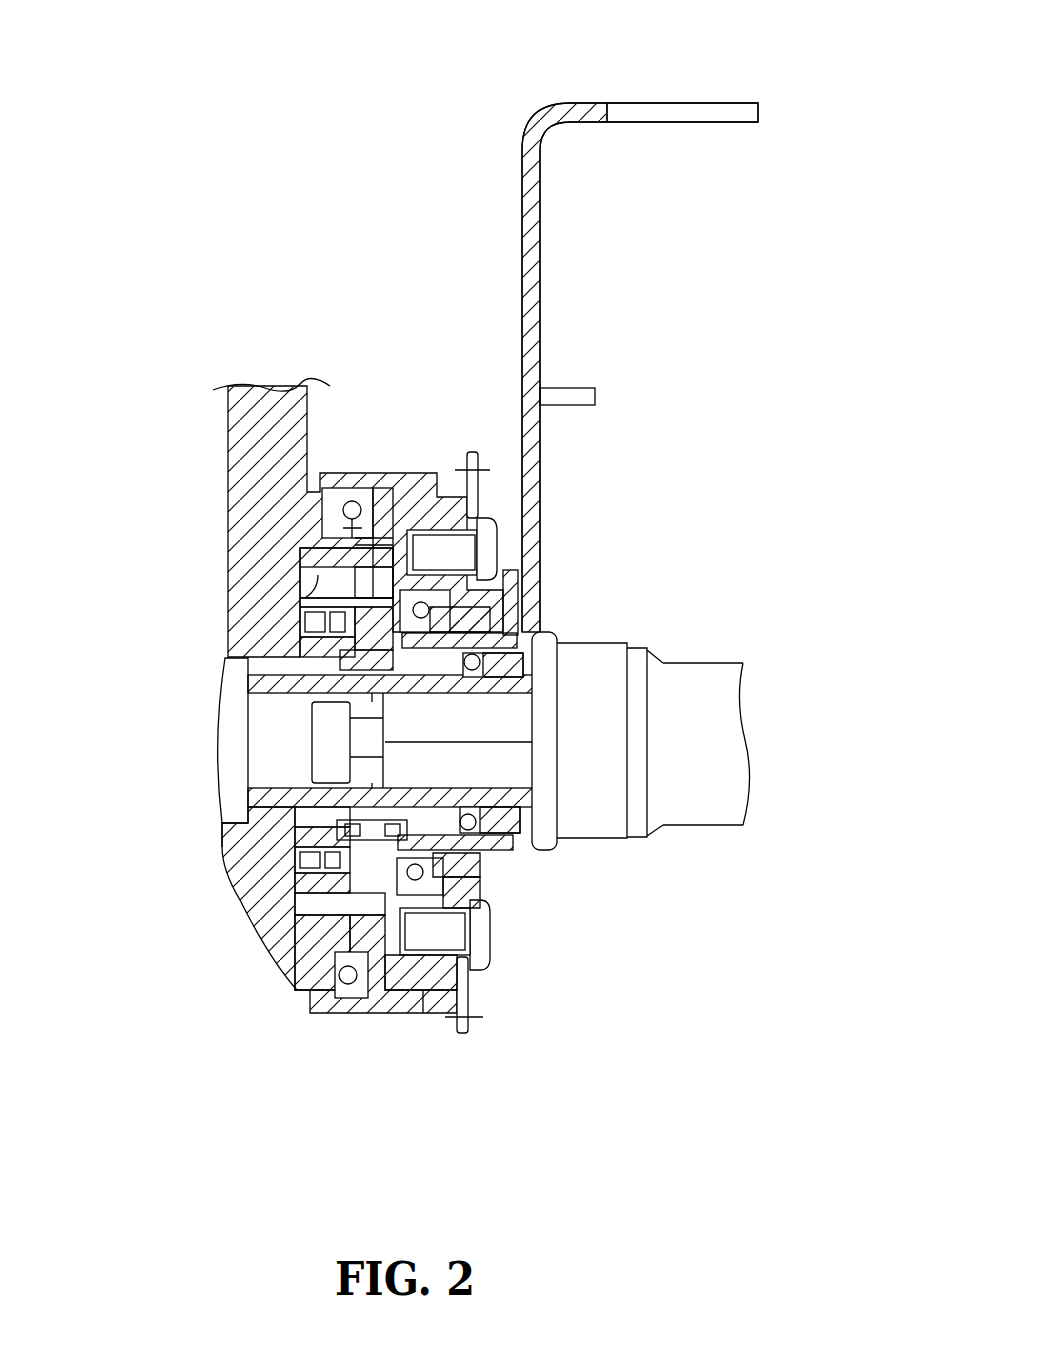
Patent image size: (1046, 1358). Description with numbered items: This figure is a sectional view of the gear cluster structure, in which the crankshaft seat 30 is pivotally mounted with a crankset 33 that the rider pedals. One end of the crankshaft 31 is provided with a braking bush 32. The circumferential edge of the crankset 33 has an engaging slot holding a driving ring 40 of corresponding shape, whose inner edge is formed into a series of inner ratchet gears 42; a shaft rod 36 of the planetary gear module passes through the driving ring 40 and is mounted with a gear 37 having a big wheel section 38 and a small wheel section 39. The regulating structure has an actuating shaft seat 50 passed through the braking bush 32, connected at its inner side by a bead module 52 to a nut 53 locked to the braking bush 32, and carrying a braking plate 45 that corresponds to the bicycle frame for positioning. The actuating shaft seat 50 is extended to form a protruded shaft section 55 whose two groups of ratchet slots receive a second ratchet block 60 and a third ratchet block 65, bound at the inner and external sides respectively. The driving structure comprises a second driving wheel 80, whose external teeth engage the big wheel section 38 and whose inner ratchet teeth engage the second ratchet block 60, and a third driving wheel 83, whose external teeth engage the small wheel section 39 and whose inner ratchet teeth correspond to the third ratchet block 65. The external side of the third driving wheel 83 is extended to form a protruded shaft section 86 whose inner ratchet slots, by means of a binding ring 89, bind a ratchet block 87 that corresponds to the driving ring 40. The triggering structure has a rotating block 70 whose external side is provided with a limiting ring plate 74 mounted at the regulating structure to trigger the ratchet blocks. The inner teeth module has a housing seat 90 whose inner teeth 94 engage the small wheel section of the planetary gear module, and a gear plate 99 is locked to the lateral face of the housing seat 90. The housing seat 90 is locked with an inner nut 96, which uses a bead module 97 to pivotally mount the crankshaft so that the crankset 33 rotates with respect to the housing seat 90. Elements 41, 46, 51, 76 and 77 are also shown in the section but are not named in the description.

The crankshaft seat 30 is at (703, 672).
The crankshaft 31 is at (515, 717).
The braking bush 32 is at (307, 797).
The crankset 33 is at (228, 432).
The shaft rod 36 is at (313, 908).
The gear 37 is at (380, 925).
The big wheel section 38 is at (355, 990).
The small wheel section 39 is at (312, 965).
The driving ring 40 is at (303, 603).
The support member 41 is at (297, 556).
The inner ratchet gears 42 is at (307, 627).
The braking plate 45 is at (533, 290).
The bracket arm 46 is at (660, 108).
The actuating shaft seat 50 is at (448, 830).
The plate 51 is at (475, 832).
The bead module 52 is at (497, 843).
The nut 53 is at (532, 840).
The protruded shaft section 55 is at (407, 813).
The second ratchet block 60 is at (308, 693).
The third ratchet block 65 is at (310, 855).
The rotating block 70 is at (475, 618).
The limiting ring plate 74 is at (440, 627).
The sleeve 76 is at (393, 640).
The plate 77 is at (430, 640).
The second driving wheel 80 is at (378, 822).
The third driving wheel 83 is at (357, 607).
The protruded shaft section 86 is at (300, 662).
The ratchet block 87 is at (307, 647).
The binding ring 89 is at (318, 598).
The housing seat 90 is at (418, 473).
The inner teeth 94 is at (382, 497).
The inner nut 96 is at (360, 487).
The bead module 97 is at (351, 503).
The gear plate 99 is at (473, 455).